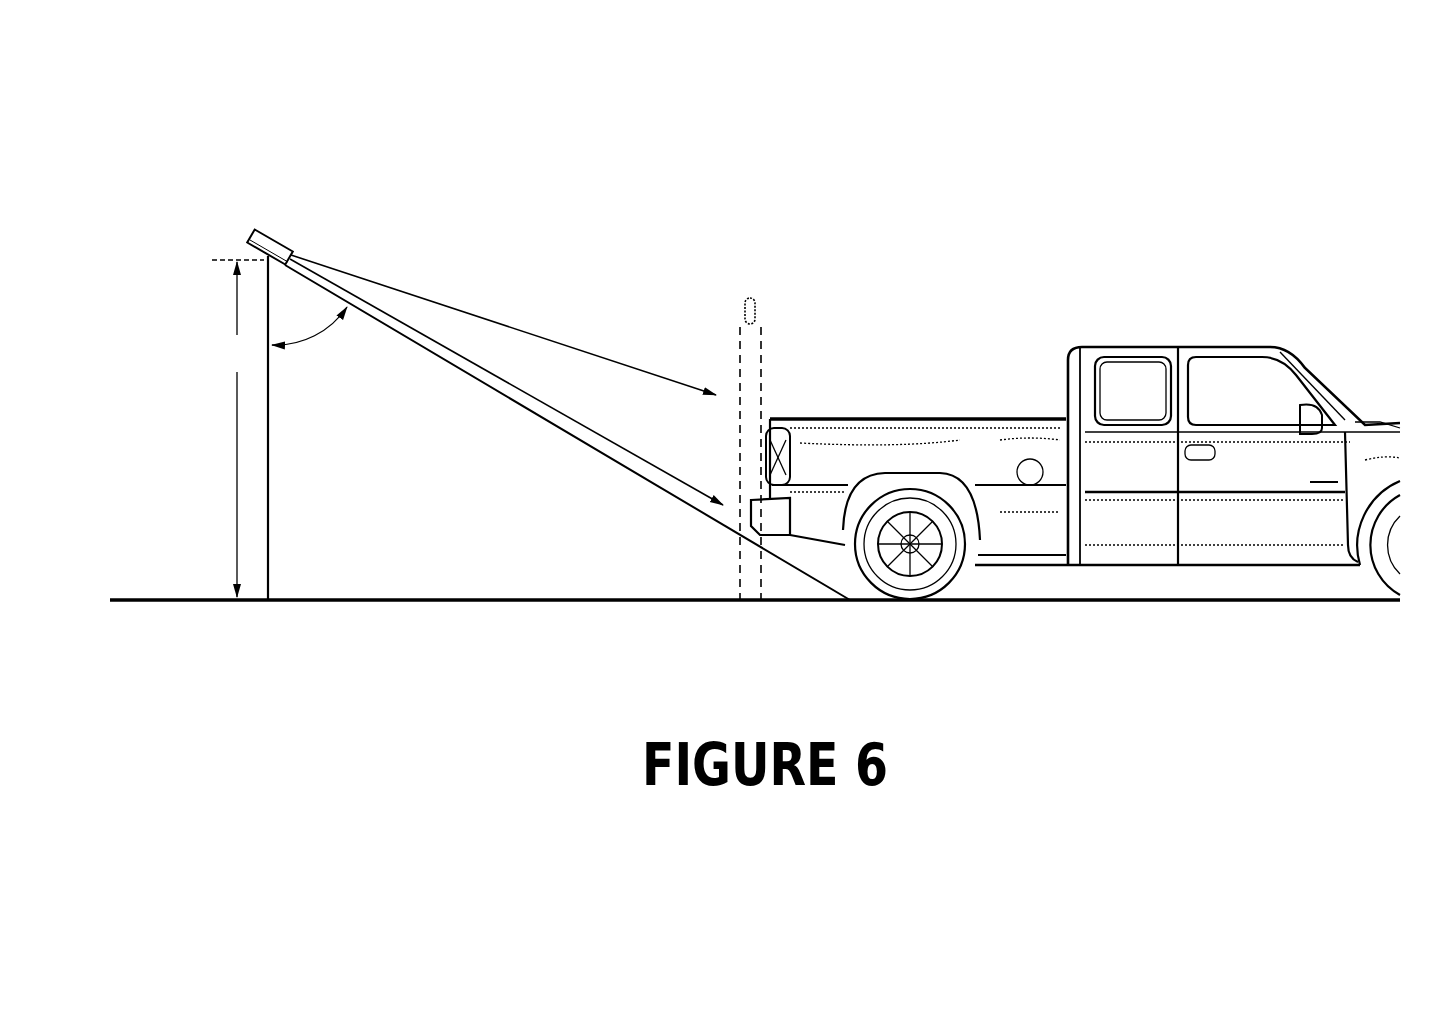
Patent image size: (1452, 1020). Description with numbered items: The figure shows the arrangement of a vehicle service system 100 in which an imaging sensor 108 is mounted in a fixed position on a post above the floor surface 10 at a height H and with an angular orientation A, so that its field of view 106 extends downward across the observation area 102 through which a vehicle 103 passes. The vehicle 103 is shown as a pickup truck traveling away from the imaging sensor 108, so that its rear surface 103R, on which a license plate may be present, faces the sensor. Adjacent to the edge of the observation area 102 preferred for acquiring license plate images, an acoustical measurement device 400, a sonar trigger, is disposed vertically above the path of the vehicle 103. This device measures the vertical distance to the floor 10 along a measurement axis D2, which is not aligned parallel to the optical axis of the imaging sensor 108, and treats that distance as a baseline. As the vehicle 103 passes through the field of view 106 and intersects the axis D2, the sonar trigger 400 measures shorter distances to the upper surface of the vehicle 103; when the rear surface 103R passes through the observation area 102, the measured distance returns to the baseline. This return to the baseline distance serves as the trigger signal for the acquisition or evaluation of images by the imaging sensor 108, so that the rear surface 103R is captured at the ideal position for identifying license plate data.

The floor surface 10 is at (755, 646).
The vehicle service system 100 is at (188, 382).
The imaging sensor 108 is at (327, 215).
The field of view 106 is at (506, 380).
The observation area 102 is at (610, 486).
The acoustical measurement device 400 is at (812, 272).
The measurement axis D2 is at (824, 451).
The height H is at (238, 428).
The angular orientation A is at (309, 338).
The vehicle 103 is at (1085, 432).
The rear surface 103R is at (650, 548).